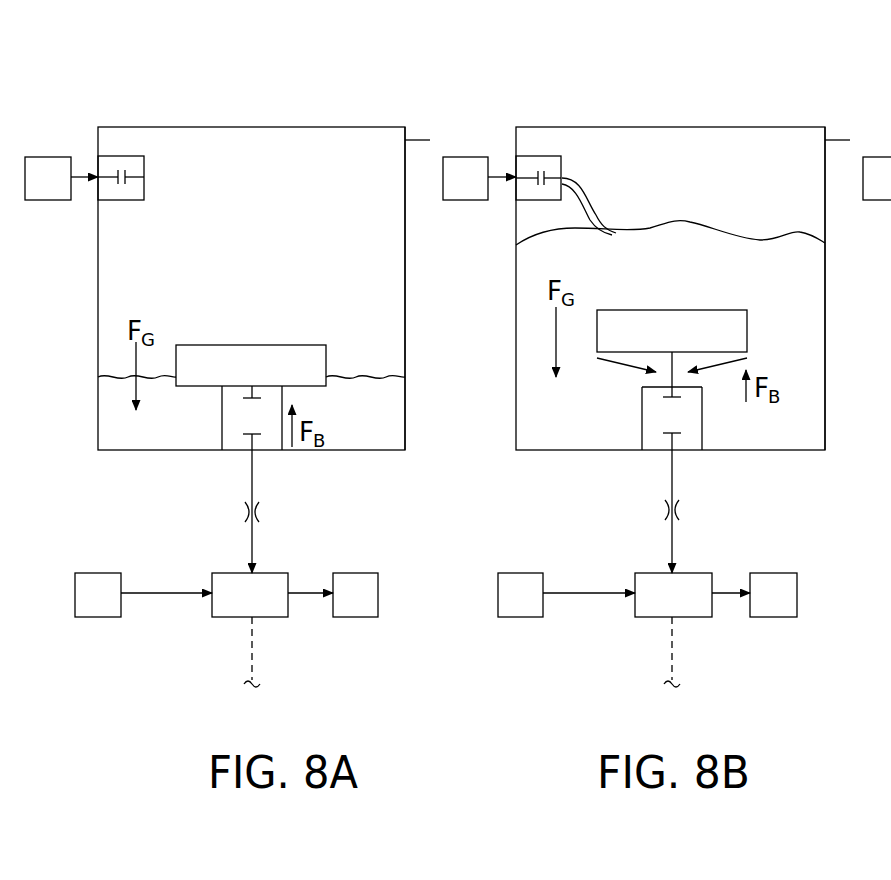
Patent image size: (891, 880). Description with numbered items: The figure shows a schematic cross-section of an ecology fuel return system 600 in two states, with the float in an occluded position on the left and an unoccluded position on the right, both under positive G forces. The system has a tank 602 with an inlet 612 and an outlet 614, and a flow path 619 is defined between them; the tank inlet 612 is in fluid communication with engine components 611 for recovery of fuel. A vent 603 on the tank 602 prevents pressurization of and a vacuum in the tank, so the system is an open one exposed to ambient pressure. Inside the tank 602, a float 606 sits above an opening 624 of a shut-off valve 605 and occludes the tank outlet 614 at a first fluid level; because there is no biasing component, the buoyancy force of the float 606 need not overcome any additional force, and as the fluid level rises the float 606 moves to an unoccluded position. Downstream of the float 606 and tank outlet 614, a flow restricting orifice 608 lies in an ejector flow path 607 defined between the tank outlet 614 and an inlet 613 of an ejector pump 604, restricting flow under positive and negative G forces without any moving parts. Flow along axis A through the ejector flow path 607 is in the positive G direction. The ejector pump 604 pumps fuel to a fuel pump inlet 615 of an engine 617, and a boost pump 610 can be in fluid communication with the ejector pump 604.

In FIG. 8A, the ecology fuel return system 600 is at (274, 307).
In FIG. 8B, the ecology fuel return system 600 is at (692, 271).
In FIG. 8A, the tank 602 is at (405, 327).
In FIG. 8B, the tank 602 is at (825, 327).
In FIG. 8A, the vent 603 is at (418, 140).
In FIG. 8B, the vent 603 is at (838, 140).
In FIG. 8A, the ejector pump 604 is at (269, 607).
In FIG. 8B, the ejector pump 604 is at (692, 607).
In FIG. 8A, the shut-off valve 605 is at (289, 389).
In FIG. 8B, the shut-off valve 605 is at (720, 390).
In FIG. 8A, the float 606 is at (270, 379).
In FIG. 8B, the float 606 is at (691, 344).
In FIG. 8A, the ejector flow path 607 is at (252, 541).
In FIG. 8B, the ejector flow path 607 is at (672, 468).
In FIG. 8A, the flow restricting orifice 608 is at (259, 512).
In FIG. 8B, the flow restricting orifice 608 is at (679, 512).
In FIG. 8A, the boost pump 610 is at (117, 608).
In FIG. 8B, the boost pump 610 is at (539, 608).
In FIG. 8A, the engine components 611 is at (67, 192).
In FIG. 8B, the engine components 611 is at (485, 192).
In FIG. 8A, the inlet 612 is at (100, 177).
In FIG. 8B, the inlet 612 is at (518, 177).
In FIG. 8A, the inlet 613 is at (214, 593).
In FIG. 8B, the inlet 613 is at (637, 593).
In FIG. 8A, the outlet 614 is at (282, 450).
In FIG. 8B, the outlet 614 is at (702, 450).
In FIG. 8A, the fuel pump inlet 615 is at (335, 598).
In FIG. 8B, the fuel pump inlet 615 is at (752, 598).
In FIG. 8A, the engine 617 is at (374, 608).
In FIG. 8B, the engine 617 is at (792, 608).
In FIG. 8A, the flow path 619 is at (222, 243).
In FIG. 8B, the flow path 619 is at (643, 253).
In FIG. 8A, the opening 624 is at (222, 386).
In FIG. 8B, the opening 624 is at (642, 387).
In FIG. 8A, the axis A is at (252, 662).
In FIG. 8B, the axis A is at (672, 662).